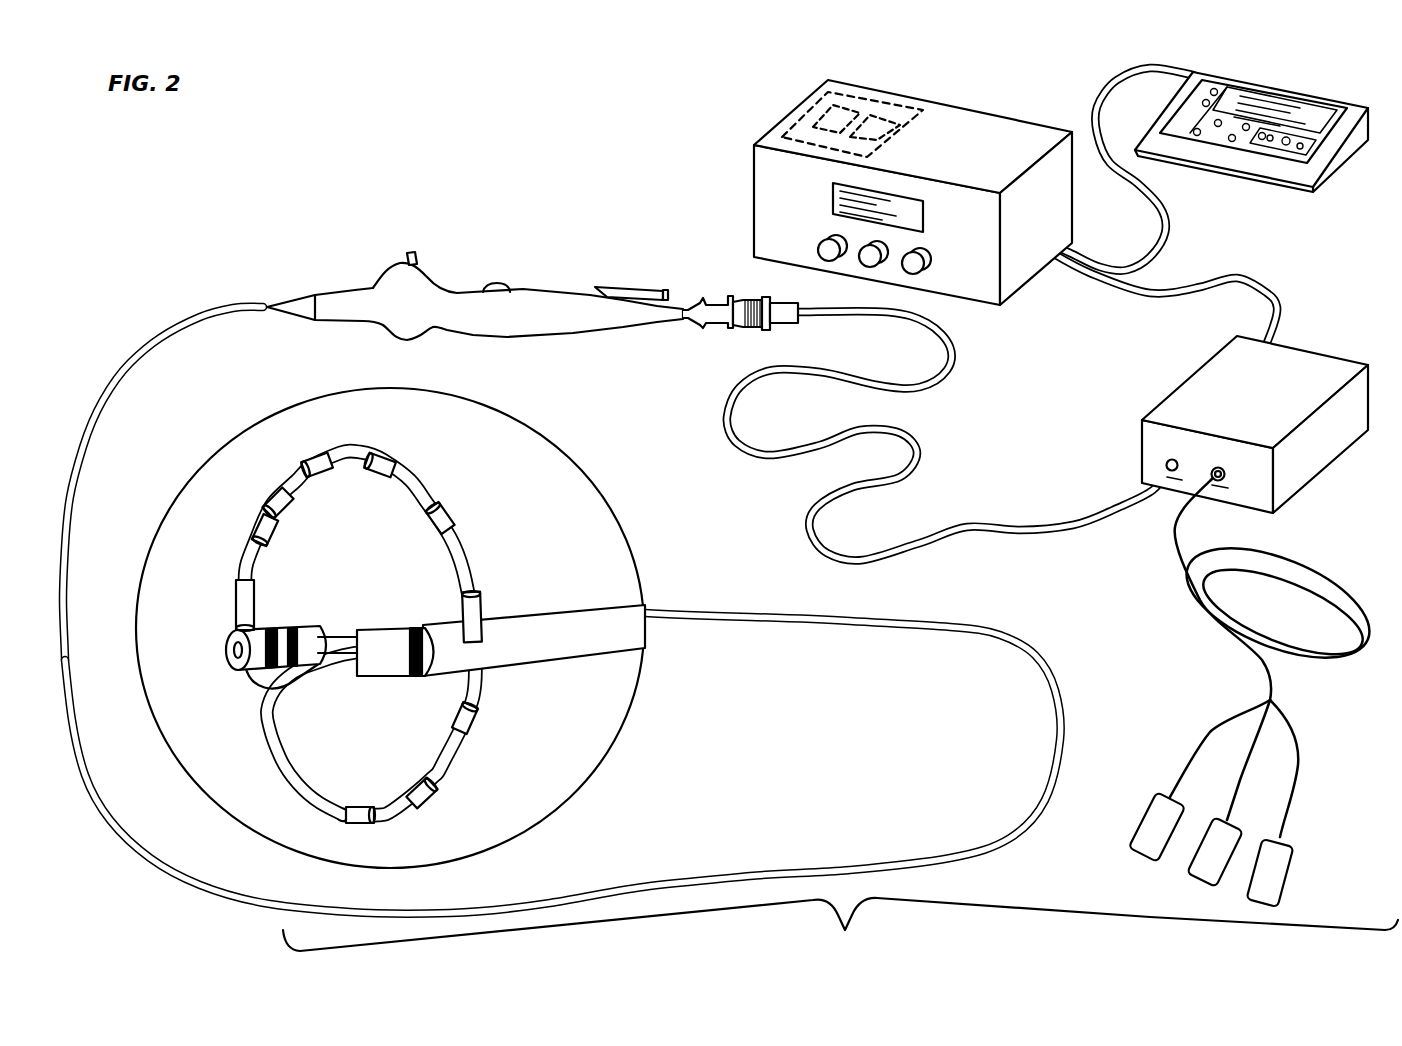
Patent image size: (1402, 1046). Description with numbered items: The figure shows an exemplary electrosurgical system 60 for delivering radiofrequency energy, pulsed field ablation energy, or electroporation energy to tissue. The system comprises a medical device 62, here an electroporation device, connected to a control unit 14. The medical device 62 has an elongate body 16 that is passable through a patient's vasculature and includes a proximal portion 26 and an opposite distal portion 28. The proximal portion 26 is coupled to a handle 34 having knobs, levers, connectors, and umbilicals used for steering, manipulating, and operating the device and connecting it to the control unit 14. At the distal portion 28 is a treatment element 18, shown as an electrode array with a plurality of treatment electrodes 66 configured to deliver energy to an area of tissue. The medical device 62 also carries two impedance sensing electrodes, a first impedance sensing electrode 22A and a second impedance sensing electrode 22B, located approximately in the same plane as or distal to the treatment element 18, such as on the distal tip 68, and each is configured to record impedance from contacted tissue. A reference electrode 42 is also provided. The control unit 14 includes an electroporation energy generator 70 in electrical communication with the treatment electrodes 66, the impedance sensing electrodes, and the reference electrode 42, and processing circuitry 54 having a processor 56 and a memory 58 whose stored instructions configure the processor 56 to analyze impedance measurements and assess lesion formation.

The control unit 14 is at (1006, 192).
The elongate body 16 is at (170, 873).
The treatment element 18 is at (390, 628).
The first impedance sensing electrode 22A is at (281, 617).
The second impedance sensing electrode 22B is at (322, 628).
The proximal portion 26 is at (132, 362).
The distal portion 28 is at (577, 630).
The handle 34 is at (549, 287).
The reference electrode 42 is at (435, 655).
The processing circuitry 54 is at (833, 99).
The processor 56 is at (843, 105).
The memory 58 is at (890, 113).
The electrosurgical system 60 is at (840, 932).
The medical device 62 is at (461, 265).
The treatment electrodes 66 is at (237, 592).
The distal tip 68 is at (250, 675).
The electroporation energy generator 70 is at (896, 173).